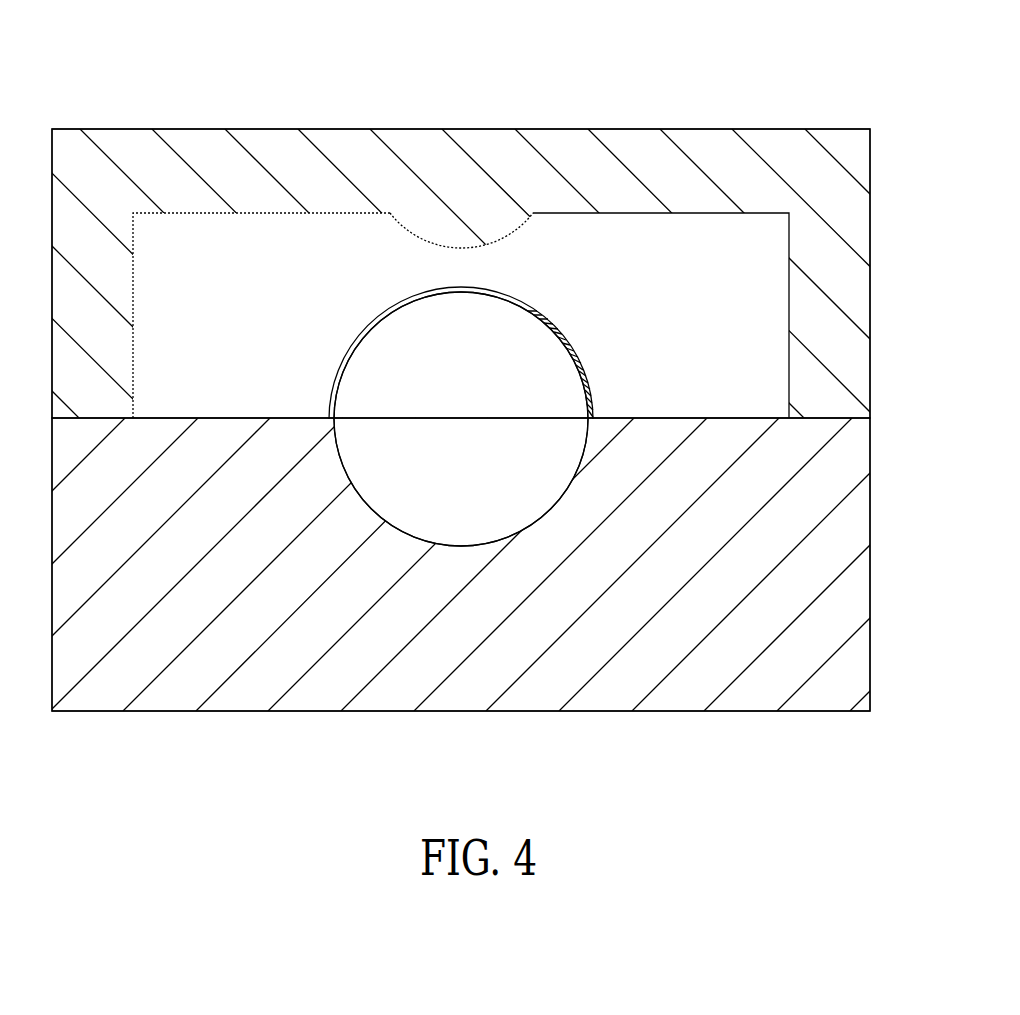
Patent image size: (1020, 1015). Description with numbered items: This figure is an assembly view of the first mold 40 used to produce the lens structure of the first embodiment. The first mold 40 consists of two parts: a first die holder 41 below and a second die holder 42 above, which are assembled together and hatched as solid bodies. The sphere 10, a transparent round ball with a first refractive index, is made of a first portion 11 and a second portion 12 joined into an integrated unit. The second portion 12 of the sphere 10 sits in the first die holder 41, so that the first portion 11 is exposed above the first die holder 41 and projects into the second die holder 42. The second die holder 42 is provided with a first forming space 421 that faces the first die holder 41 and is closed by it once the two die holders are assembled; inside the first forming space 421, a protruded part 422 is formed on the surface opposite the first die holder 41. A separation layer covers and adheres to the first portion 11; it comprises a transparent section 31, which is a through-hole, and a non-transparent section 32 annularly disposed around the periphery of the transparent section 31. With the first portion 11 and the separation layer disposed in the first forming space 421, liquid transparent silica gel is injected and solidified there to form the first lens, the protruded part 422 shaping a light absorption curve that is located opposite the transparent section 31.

The first mold 40 is at (270, 127).
The second die holder 42 is at (677, 153).
The first forming space 421 is at (598, 256).
The protruded part 422 is at (413, 235).
The first die holder 41 is at (660, 712).
The sphere 10 is at (331, 412).
The first portion 11 is at (572, 344).
The second portion 12 is at (588, 453).
The transparent section 31 is at (505, 297).
The non-transparent section 32 is at (583, 366).